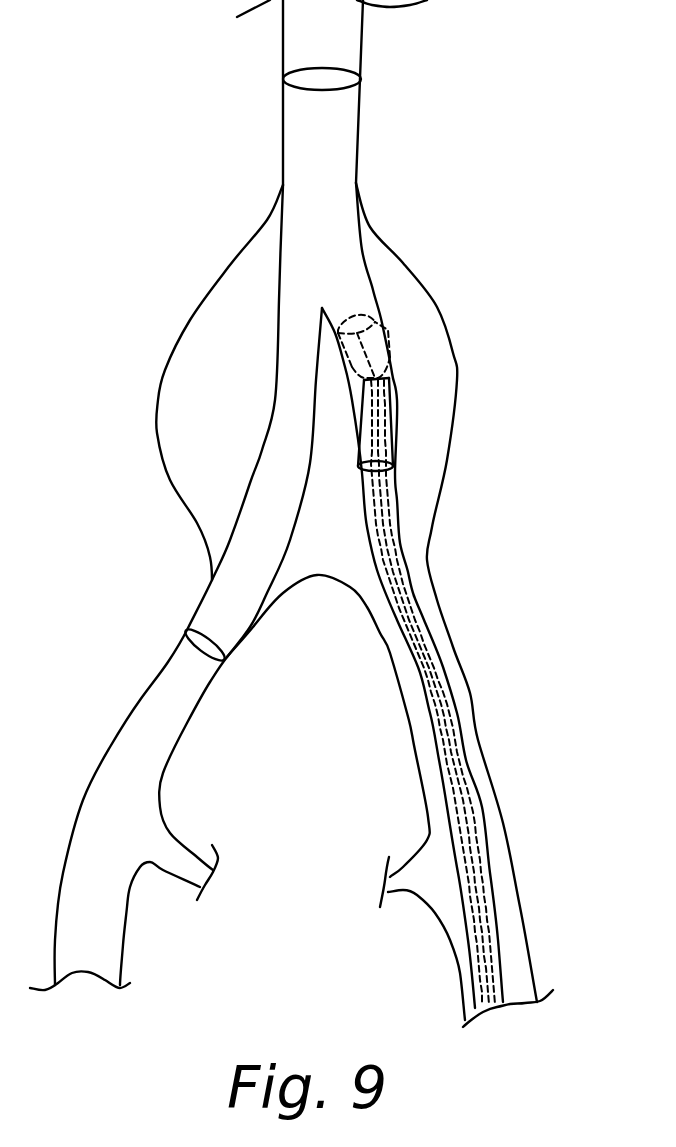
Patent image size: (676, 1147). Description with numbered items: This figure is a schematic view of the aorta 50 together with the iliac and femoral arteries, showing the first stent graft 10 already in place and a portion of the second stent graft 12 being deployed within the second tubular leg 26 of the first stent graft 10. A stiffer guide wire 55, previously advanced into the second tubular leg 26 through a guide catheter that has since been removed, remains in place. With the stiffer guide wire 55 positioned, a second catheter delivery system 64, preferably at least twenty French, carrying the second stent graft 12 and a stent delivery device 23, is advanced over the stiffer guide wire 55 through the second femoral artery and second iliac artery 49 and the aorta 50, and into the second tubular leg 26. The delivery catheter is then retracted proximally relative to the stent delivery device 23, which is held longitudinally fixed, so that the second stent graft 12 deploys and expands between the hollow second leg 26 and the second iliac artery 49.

The first stent graft 10 is at (323, 197).
The second stent graft 12 is at (377, 349).
The stent delivery device 23 is at (437, 695).
The second tubular leg 26 is at (396, 388).
The second iliac artery 49 is at (440, 645).
The aorta 50 is at (190, 418).
The stiffer guide wire 55 is at (350, 303).
The second catheter delivery system 64 is at (480, 838).